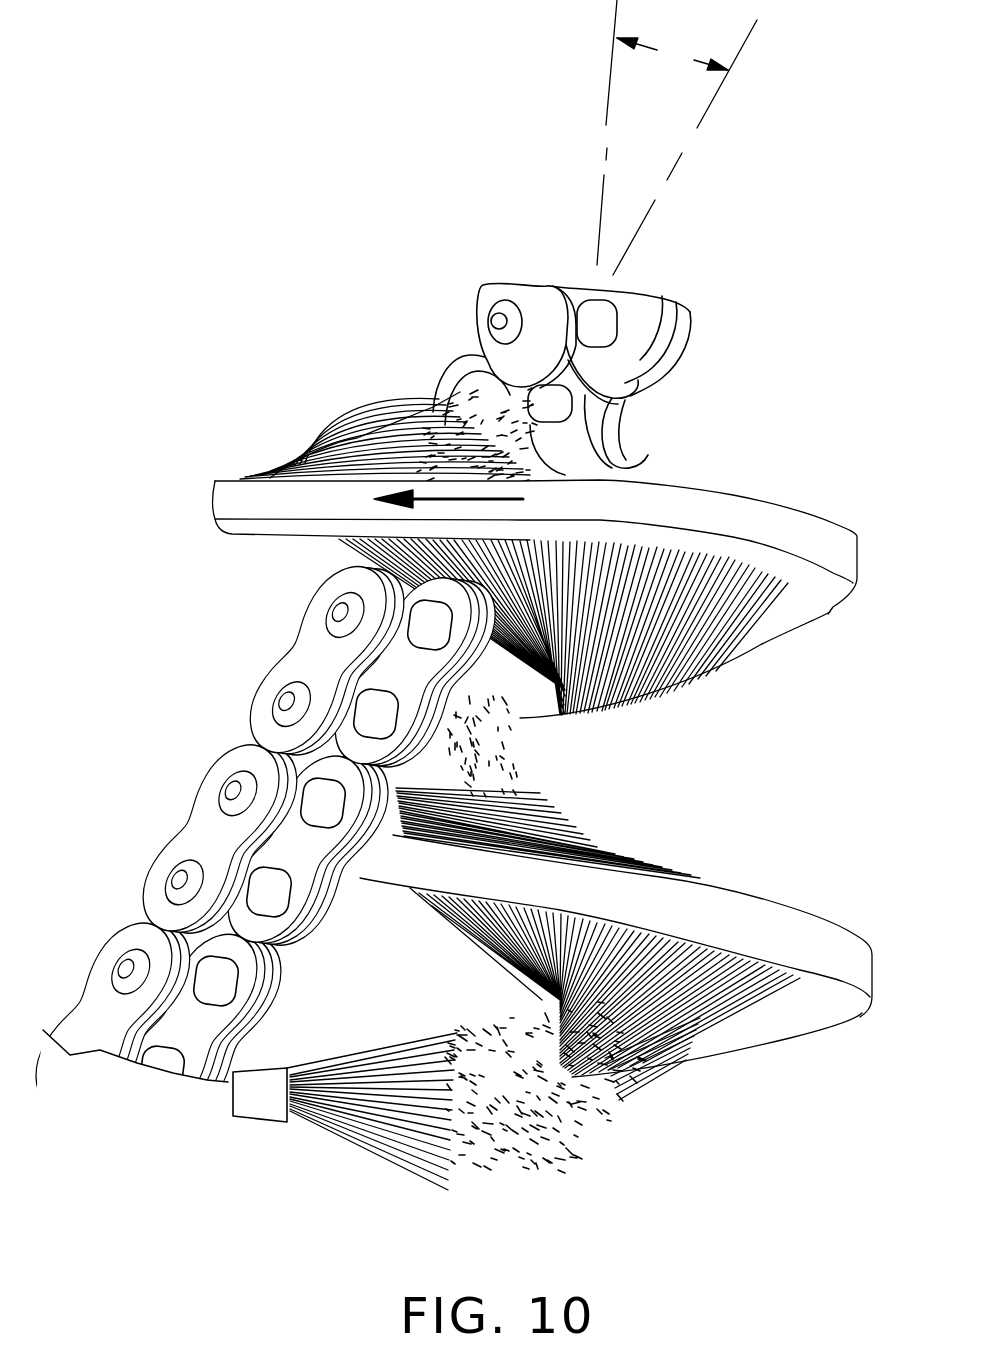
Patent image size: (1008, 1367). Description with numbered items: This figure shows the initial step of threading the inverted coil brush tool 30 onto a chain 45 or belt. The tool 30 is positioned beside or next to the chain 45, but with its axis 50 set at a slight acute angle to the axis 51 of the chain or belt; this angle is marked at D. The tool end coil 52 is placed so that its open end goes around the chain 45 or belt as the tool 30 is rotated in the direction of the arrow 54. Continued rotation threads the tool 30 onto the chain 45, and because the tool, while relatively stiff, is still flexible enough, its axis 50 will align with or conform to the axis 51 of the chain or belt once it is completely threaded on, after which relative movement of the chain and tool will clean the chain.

The tool 30 is at (750, 842).
The chain 45 is at (562, 379).
The axis of the tool 50 is at (607, 85).
The axis of the chain 51 is at (708, 110).
The tool end coil 52 is at (388, 434).
The arrow 54 is at (440, 493).
The angle D is at (672, 51).